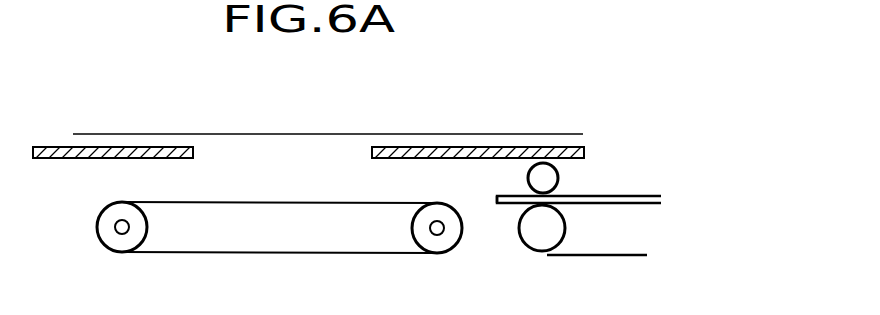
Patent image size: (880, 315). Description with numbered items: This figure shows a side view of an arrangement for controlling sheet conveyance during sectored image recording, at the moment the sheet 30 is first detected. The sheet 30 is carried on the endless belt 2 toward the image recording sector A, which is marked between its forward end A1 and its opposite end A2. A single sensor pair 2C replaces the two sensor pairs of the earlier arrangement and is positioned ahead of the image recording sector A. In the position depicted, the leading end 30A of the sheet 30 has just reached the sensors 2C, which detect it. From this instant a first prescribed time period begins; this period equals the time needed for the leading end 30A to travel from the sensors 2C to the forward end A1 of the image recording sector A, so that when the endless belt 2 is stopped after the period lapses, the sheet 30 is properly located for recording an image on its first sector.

The endless belt 2 is at (364, 253).
The sensor pair 2C is at (497, 175).
The sheet 30 is at (605, 197).
The leading end of the sheet 30A is at (496, 198).
The image recording sector A is at (350, 99).
The forward end of the image recording sector A1 is at (194, 152).
The second edge position A2 is at (372, 150).